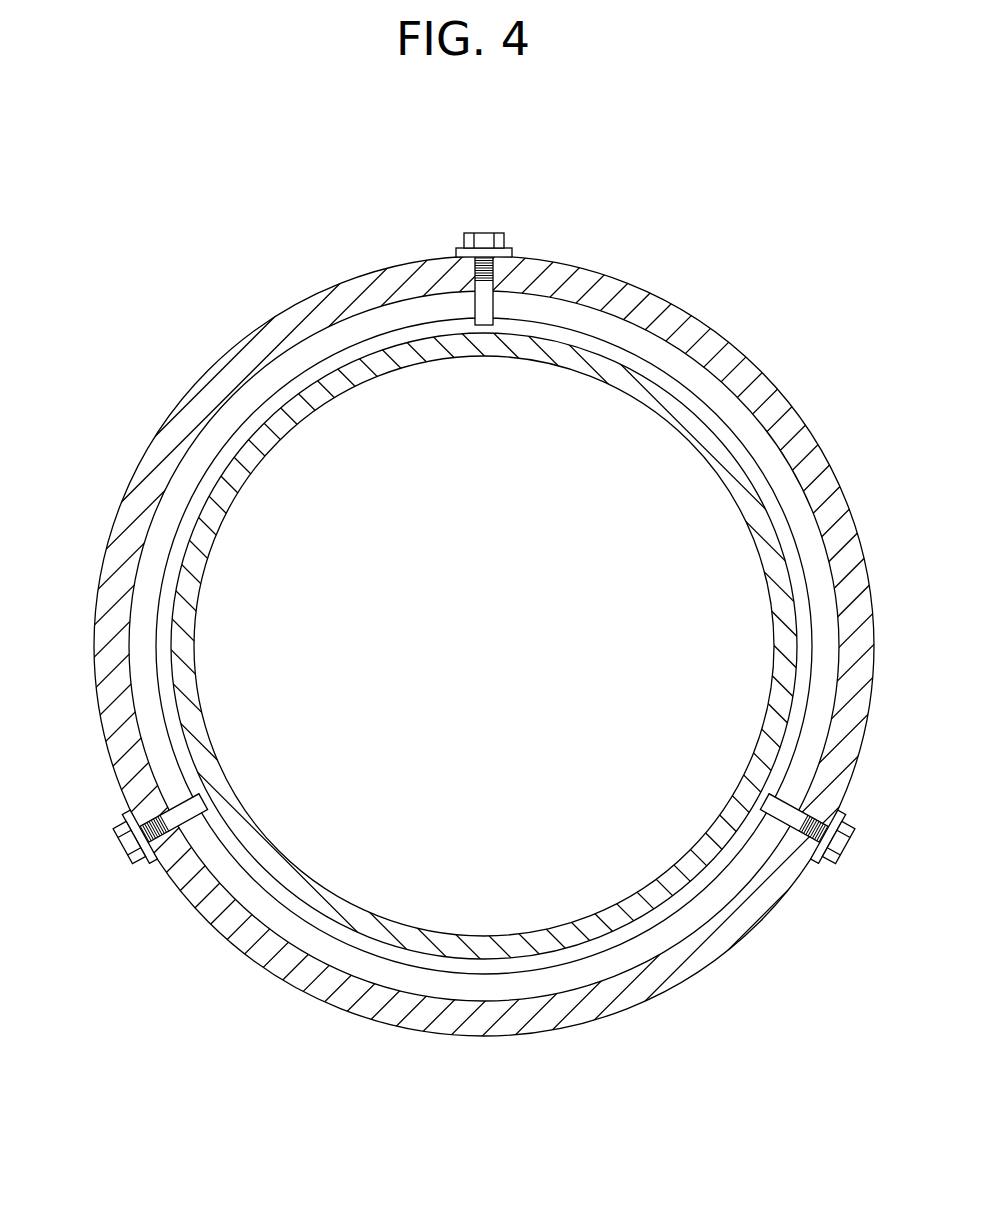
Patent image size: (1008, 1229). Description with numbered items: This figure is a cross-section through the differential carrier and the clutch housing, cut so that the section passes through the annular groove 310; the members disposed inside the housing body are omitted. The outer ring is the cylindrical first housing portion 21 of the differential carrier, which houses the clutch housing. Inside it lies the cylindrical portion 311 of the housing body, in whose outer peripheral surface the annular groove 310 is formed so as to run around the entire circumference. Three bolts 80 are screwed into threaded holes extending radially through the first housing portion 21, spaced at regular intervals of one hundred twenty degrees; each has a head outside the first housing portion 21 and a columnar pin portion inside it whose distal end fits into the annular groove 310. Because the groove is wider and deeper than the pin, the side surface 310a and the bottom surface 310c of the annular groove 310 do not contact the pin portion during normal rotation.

The first housing portion 21 is at (277, 328).
The bolt 80 is at (488, 232).
The annular groove 310 is at (504, 645).
The side surface of the annular groove 310a is at (210, 478).
The bottom surface of the annular groove 310c is at (203, 507).
The cylindrical portion 311 is at (600, 363).